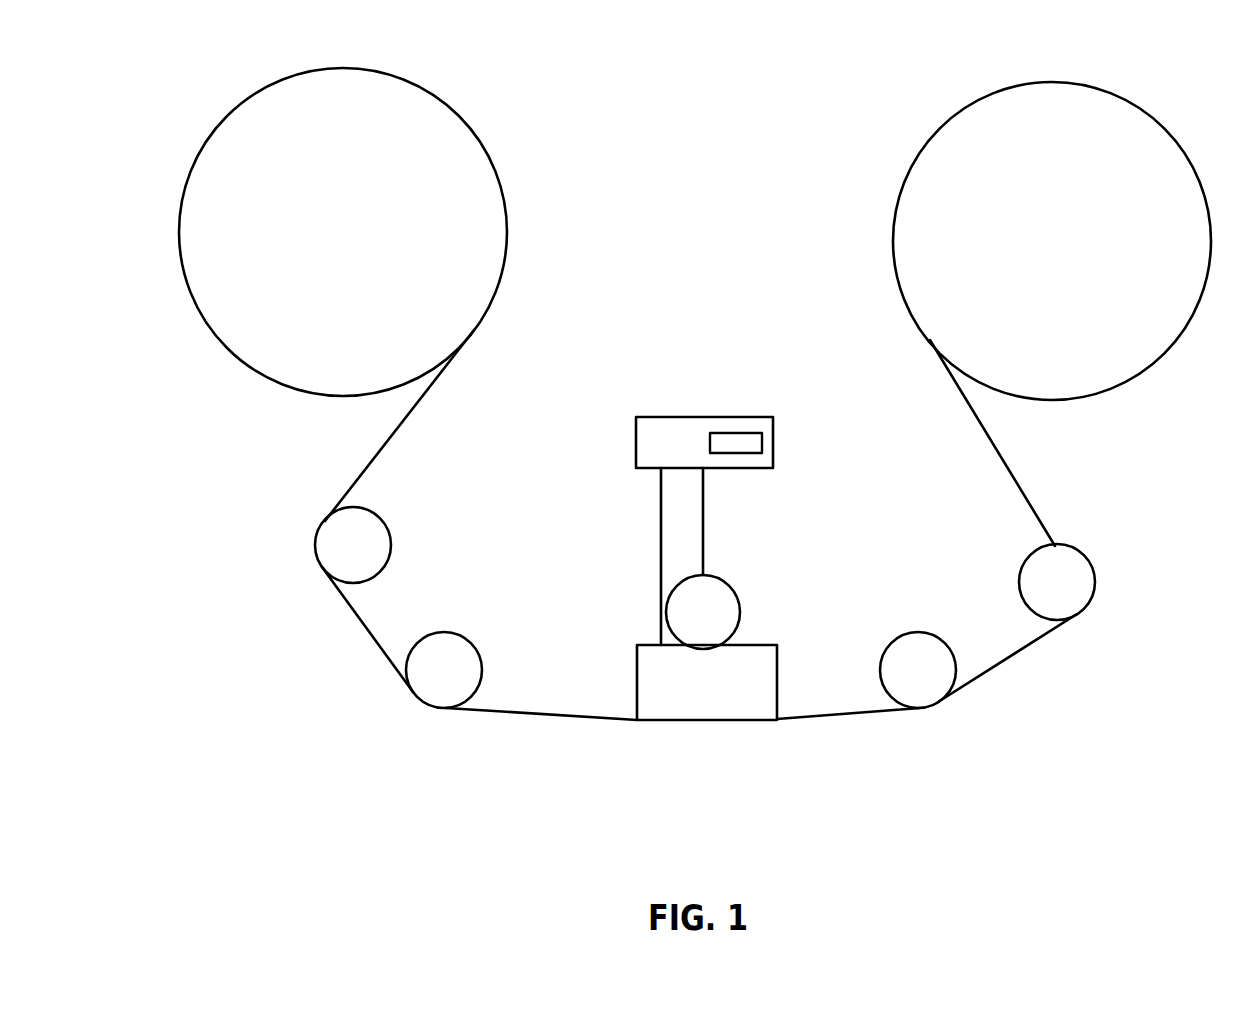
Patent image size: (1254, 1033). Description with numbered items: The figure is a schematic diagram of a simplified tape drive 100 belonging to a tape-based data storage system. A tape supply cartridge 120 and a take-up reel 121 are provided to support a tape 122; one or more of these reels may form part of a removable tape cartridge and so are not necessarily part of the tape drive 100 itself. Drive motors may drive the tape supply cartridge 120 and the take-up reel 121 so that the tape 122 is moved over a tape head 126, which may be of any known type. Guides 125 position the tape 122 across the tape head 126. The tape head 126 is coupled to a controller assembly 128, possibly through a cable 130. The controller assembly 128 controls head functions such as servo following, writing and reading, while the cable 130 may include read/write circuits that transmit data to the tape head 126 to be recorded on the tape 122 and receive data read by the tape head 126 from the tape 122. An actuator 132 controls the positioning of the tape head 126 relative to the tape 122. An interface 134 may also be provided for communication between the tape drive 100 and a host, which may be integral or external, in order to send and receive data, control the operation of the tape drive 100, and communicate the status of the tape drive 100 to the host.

The tape drive 100 is at (294, 460).
The tape supply cartridge 120 is at (503, 203).
The take-up reel 121 is at (1150, 367).
The tape 122 is at (545, 715).
The guides 125 is at (444, 632).
The tape head 126 is at (776, 683).
The controller assembly 128 is at (703, 417).
The cable 130 is at (658, 607).
The actuator 132 is at (733, 585).
The interface 134 is at (747, 433).